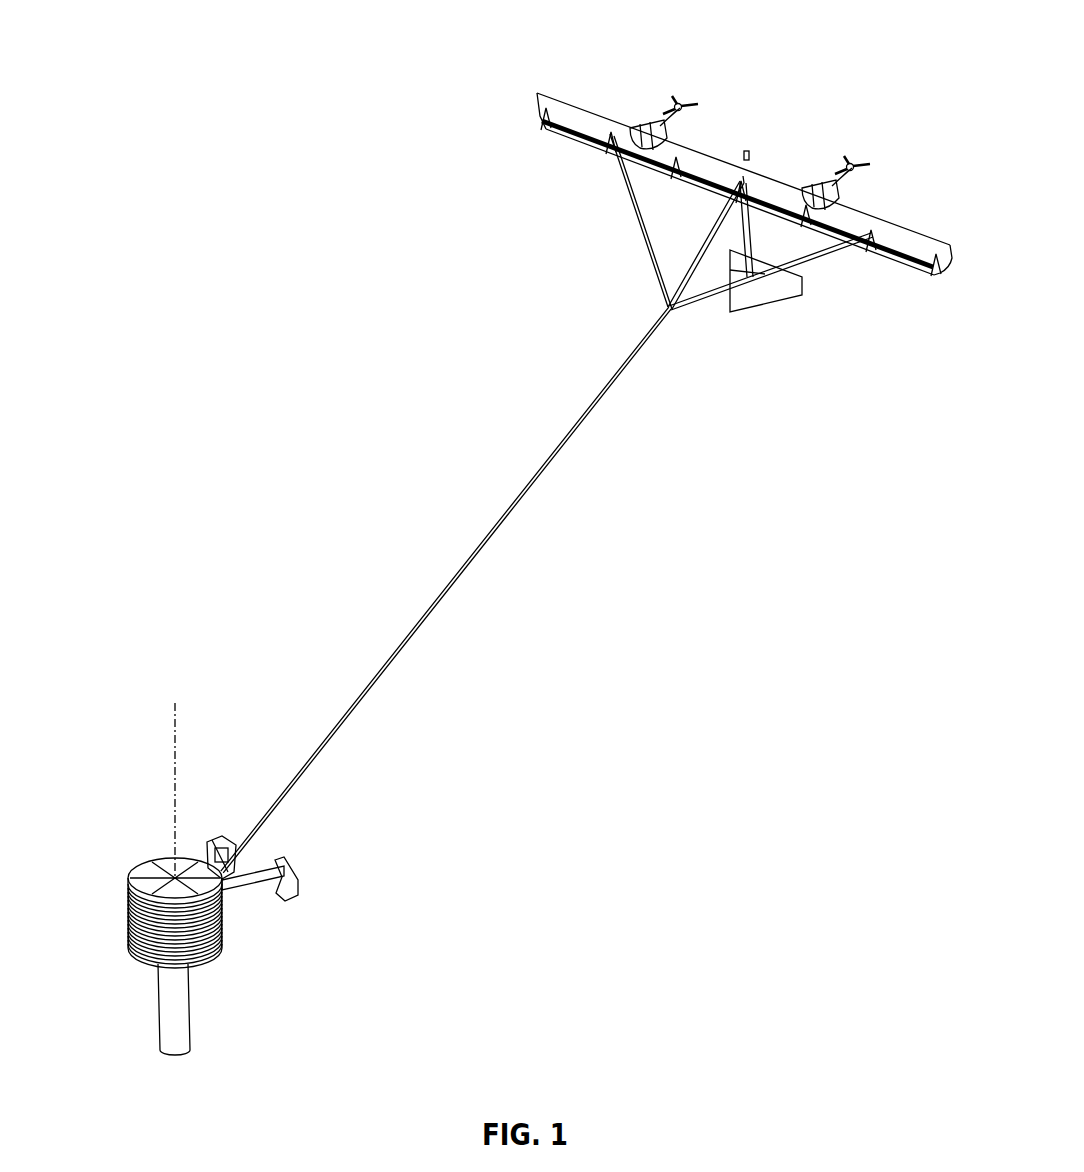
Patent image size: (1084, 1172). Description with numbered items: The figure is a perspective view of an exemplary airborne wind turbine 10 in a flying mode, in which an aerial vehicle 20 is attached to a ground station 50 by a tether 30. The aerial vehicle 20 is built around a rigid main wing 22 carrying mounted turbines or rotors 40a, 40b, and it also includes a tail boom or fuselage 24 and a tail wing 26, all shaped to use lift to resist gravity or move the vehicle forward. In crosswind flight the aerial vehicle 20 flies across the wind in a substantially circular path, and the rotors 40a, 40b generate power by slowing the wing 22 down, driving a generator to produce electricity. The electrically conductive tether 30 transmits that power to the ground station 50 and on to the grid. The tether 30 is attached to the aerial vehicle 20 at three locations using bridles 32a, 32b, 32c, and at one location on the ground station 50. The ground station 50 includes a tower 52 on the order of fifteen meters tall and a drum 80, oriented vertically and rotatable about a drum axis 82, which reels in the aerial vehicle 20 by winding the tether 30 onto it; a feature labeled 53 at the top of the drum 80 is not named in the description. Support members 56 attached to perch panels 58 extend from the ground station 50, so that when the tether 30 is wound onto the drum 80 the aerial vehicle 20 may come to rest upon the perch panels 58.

The airborne wind turbine 10 is at (316, 127).
The aerial vehicle 20 is at (774, 158).
The rigid wing 22 is at (898, 233).
The tail boom 24 is at (747, 222).
The tail wing 26 is at (743, 295).
The tether 30 is at (592, 407).
The bridle 32a is at (627, 188).
The bridle 32b is at (698, 253).
The bridle 32c is at (865, 240).
The rotor 40a is at (647, 128).
The rotor 40b is at (680, 100).
The ground station 50 is at (82, 847).
The tower 52 is at (157, 990).
The drum top 53 is at (175, 877).
The support member 56 is at (212, 847).
The perch panel 58 is at (223, 843).
The drum 80 is at (210, 942).
The drum axis 82 is at (173, 728).